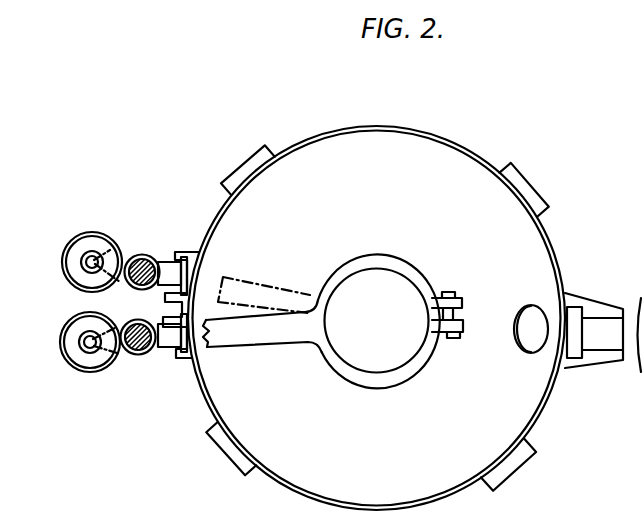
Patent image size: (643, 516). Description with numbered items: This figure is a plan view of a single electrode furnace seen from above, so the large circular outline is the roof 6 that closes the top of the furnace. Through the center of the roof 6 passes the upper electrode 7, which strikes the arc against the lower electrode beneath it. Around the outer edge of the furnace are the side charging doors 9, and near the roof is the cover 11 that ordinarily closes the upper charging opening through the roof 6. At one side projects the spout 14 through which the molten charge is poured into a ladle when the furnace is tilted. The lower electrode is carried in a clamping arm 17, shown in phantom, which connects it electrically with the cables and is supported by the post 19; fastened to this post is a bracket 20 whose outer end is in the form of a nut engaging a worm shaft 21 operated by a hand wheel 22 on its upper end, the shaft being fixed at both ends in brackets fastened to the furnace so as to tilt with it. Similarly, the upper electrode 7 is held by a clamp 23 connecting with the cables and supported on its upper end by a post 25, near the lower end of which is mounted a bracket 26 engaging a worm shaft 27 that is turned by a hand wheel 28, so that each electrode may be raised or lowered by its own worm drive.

The roof 6 is at (364, 318).
The upper electrode 7 is at (390, 321).
The side charging doors 9 is at (529, 457).
The cover 11 is at (538, 307).
The spout 14 is at (603, 320).
The clamping arm 17 is at (276, 287).
The post 19 is at (159, 260).
The bracket 20 is at (131, 255).
The worm shaft 21 is at (91, 260).
The hand wheel 22 is at (109, 233).
The clamp 23 is at (267, 341).
The post 25 is at (152, 353).
The bracket 26 is at (138, 356).
The worm shaft 27 is at (89, 349).
The hand wheel 28 is at (108, 368).